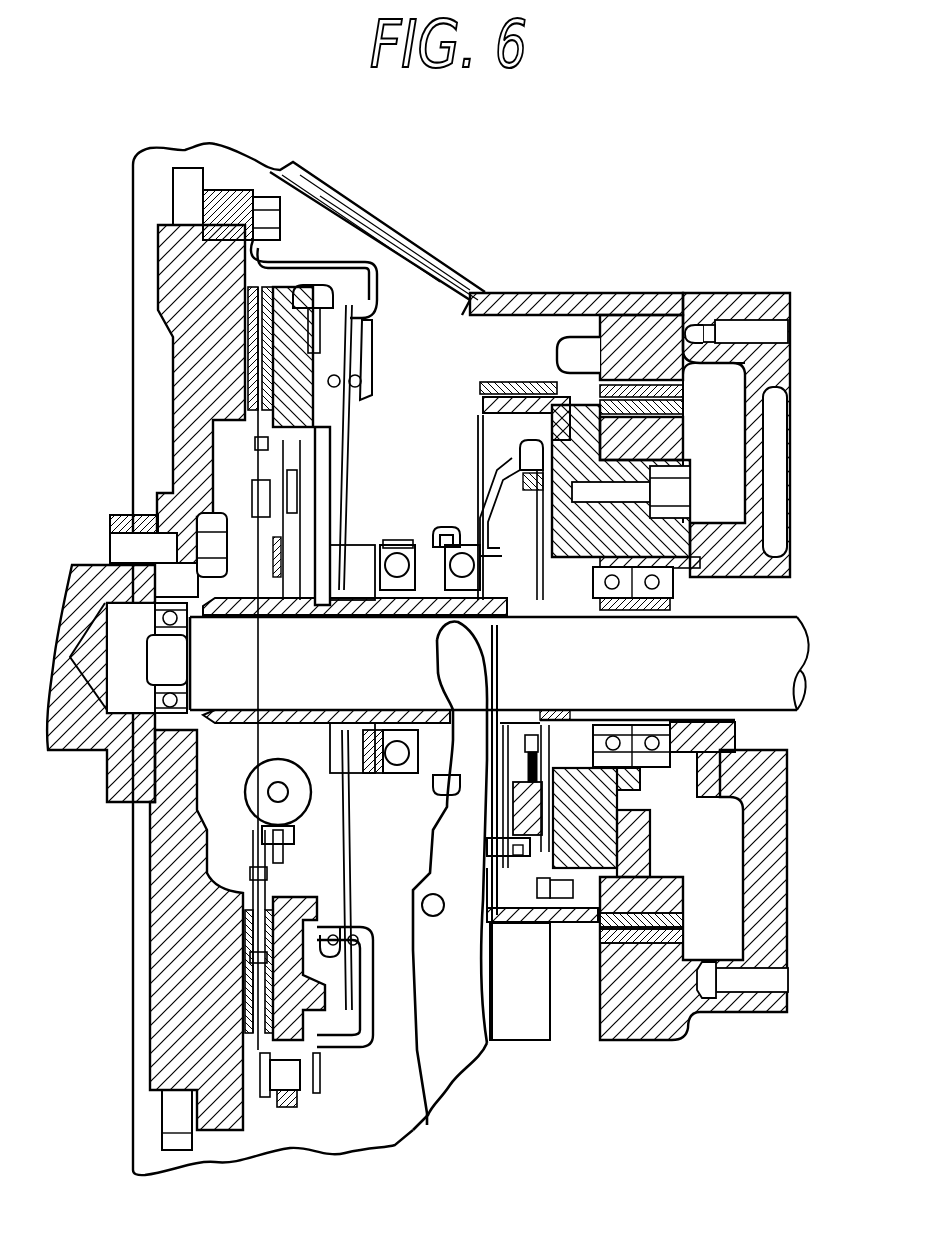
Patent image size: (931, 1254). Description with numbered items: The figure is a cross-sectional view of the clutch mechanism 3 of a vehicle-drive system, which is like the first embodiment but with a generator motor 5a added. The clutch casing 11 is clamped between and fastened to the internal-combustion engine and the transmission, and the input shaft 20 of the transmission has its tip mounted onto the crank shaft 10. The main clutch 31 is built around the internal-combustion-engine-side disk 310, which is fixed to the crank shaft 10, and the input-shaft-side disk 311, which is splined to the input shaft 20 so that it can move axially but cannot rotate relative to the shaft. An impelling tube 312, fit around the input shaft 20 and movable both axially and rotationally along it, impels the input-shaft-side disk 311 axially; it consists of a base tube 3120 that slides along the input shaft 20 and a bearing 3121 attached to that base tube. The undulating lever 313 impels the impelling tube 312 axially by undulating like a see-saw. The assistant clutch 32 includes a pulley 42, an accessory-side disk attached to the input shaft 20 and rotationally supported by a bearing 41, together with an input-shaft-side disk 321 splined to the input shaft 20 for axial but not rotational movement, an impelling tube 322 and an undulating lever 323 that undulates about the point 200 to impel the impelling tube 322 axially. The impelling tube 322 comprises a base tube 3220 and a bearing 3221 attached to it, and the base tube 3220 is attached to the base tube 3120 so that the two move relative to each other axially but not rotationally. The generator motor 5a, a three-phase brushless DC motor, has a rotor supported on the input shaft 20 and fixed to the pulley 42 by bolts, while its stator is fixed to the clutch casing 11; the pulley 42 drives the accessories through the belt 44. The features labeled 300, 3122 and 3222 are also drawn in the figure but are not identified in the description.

The clutch mechanism 3 is at (455, 330).
The clutch casing 11 is at (520, 292).
The housing bore 300 is at (552, 348).
The input-shaft-side disk 321 is at (510, 470).
The internal-combustion-engine-side disk 310 is at (190, 377).
The input-shaft-side disk 311 is at (298, 412).
The main clutch 31 is at (363, 443).
The assistant clutch 32 is at (495, 455).
The generator motor 5a is at (691, 424).
The diaphragm spring 3122 is at (348, 487).
The undulating lever 313 is at (443, 527).
The impelling tube 312 is at (413, 533).
The bearing 3121 is at (400, 540).
The pulley 42 is at (601, 546).
The input shaft 20 is at (762, 627).
The bearing 3221 is at (460, 572).
The base tube 3120 is at (473, 607).
The bearing 41 is at (635, 600).
The base tube 3220 is at (445, 705).
The impelling tube 322 is at (505, 700).
The sleeve flange 3222 is at (520, 705).
The crank shaft 10 is at (73, 757).
The point 200 is at (425, 898).
The belt 44 is at (543, 1000).
The undulating lever 323 is at (450, 1048).